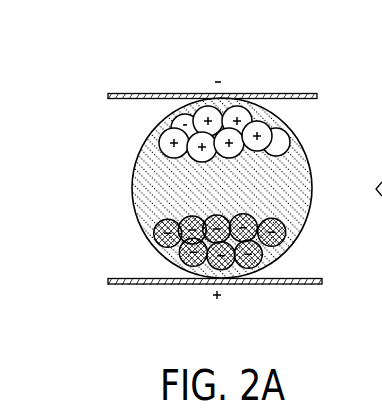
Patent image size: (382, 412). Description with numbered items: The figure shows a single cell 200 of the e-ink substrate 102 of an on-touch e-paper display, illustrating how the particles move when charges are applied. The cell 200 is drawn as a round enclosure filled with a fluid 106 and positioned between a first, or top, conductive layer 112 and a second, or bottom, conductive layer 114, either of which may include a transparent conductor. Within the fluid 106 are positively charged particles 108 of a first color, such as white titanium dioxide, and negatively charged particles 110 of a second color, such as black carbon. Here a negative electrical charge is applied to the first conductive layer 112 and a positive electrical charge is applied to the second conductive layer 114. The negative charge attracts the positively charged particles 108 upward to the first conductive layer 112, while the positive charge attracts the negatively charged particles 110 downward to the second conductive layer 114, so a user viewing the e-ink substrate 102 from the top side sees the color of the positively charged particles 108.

The e-ink substrate 102 is at (86, 70).
The fluid 106 is at (299, 204).
The positively charged particles 108 is at (204, 107).
The negatively charged particles 110 is at (263, 252).
The first conductive layer 112 is at (302, 93).
The second conductive layer 114 is at (315, 287).
The cell 200 is at (302, 232).